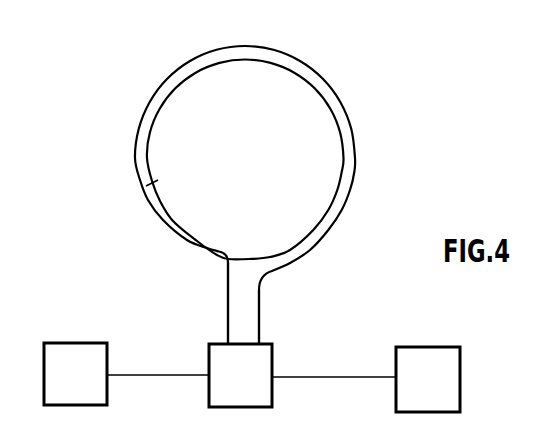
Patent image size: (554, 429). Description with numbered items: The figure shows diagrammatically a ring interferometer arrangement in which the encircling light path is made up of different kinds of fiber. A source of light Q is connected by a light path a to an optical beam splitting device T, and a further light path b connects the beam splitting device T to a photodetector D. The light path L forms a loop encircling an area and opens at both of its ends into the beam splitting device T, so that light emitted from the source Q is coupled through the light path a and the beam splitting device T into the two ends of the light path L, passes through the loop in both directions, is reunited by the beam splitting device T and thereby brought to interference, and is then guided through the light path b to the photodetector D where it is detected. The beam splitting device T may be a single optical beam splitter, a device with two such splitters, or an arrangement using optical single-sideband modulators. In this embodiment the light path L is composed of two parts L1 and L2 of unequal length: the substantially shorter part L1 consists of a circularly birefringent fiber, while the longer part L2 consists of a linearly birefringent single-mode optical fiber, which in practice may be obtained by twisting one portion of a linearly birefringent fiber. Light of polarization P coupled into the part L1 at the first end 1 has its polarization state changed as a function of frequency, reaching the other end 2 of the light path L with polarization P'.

The light path L is at (245, 182).
The first part of light path L1 is at (179, 204).
The second part of light path L2 is at (245, 160).
The first end of light path 1 is at (219, 303).
The second end of light path 2 is at (270, 317).
The source of light Q is at (75, 374).
The optical beam splitting device T is at (240, 375).
The photodetector D is at (428, 379).
The light path a is at (155, 376).
The light path b is at (342, 378).